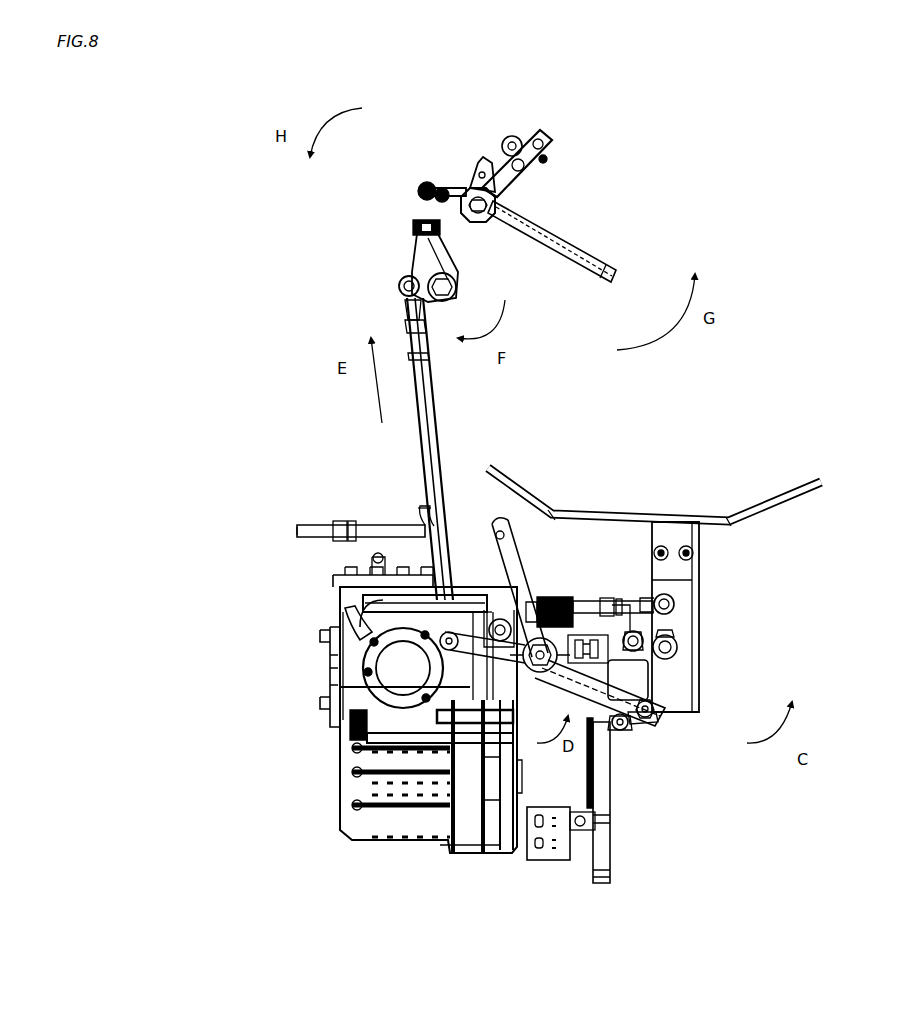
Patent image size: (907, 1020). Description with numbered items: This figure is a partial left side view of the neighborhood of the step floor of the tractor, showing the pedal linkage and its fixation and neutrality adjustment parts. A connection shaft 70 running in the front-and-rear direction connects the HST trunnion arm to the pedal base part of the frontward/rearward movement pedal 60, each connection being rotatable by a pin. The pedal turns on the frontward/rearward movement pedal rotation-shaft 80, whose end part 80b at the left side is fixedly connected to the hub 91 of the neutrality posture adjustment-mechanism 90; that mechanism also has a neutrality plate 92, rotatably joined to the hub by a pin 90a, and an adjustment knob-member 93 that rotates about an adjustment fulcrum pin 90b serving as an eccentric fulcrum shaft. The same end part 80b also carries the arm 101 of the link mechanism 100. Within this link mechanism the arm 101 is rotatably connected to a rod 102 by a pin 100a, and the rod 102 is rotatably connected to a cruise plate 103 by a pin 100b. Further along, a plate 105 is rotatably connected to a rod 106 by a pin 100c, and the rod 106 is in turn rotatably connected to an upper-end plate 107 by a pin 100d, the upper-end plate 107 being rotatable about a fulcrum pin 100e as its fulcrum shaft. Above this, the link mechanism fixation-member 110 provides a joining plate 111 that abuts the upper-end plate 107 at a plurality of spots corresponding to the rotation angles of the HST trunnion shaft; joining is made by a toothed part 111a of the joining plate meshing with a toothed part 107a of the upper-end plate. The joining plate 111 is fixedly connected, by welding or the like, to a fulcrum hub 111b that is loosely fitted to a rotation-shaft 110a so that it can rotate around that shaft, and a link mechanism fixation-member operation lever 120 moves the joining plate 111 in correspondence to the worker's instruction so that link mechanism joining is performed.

The frontward/rearward movement pedal 60 is at (825, 481).
The connection shaft 70 is at (597, 600).
The frontward/rearward movement pedal rotation-shaft 80 is at (650, 648).
The end part 80b is at (684, 642).
The neutrality posture adjustment-mechanism 90 is at (718, 788).
The pin 90a is at (622, 724).
The adjustment fulcrum pin 90b is at (540, 652).
The hub 91 is at (652, 712).
The neutrality plate 92 is at (648, 722).
The adjustment knob-member 93 is at (533, 672).
The link mechanism 100 is at (378, 478).
The pin 100a is at (637, 620).
The pin 100b is at (612, 730).
The pin 100c is at (362, 612).
The pin 100d is at (400, 290).
The fulcrum pin 100e is at (458, 284).
The arm 101 is at (660, 628).
The rod 102 is at (655, 685).
The cruise plate 103 is at (600, 745).
The plate 105 is at (460, 672).
The rod 106 is at (449, 436).
The upper-end plate 107 is at (416, 256).
The toothed part 107a is at (421, 226).
The link mechanism fixation-member 110 is at (476, 138).
The rotation-shaft 110a is at (496, 213).
The joining plate 111 is at (484, 160).
The toothed part 111a is at (420, 186).
The fulcrum hub 111b is at (466, 190).
The link mechanism fixation-member operation lever 120 is at (605, 262).